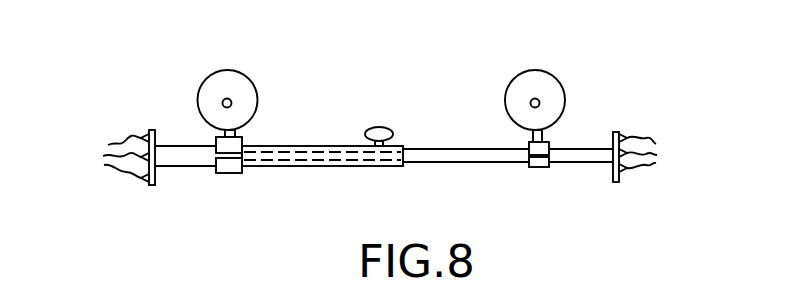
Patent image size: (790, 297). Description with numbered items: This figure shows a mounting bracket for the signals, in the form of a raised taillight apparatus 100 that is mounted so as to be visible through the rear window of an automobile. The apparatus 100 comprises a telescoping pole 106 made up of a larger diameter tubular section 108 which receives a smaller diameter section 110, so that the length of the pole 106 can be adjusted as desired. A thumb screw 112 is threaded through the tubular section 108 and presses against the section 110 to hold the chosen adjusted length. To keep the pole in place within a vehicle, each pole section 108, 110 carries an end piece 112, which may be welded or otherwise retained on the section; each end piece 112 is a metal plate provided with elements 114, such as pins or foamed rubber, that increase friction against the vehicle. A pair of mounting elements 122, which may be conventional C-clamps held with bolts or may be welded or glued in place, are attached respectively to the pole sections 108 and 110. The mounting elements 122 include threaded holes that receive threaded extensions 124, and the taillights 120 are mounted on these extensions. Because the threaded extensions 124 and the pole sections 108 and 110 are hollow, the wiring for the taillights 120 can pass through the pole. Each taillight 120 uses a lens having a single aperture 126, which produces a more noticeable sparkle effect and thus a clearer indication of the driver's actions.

The raised taillight apparatus 100 is at (571, 132).
The telescoping pole 106 is at (357, 171).
The larger diameter tubular section 108 is at (287, 146).
The smaller diameter section 110 is at (425, 147).
The thumb screw / end piece 112 is at (155, 184).
The friction elements 114 is at (378, 158).
The taillights 120 is at (240, 66).
The mounting elements 122 is at (227, 174).
The threaded extensions 124 is at (217, 137).
The single aperture 126 is at (224, 100).